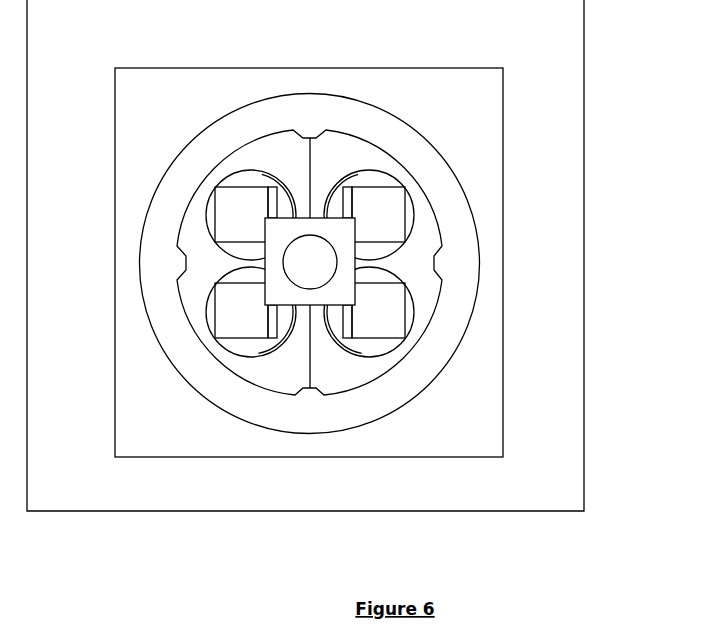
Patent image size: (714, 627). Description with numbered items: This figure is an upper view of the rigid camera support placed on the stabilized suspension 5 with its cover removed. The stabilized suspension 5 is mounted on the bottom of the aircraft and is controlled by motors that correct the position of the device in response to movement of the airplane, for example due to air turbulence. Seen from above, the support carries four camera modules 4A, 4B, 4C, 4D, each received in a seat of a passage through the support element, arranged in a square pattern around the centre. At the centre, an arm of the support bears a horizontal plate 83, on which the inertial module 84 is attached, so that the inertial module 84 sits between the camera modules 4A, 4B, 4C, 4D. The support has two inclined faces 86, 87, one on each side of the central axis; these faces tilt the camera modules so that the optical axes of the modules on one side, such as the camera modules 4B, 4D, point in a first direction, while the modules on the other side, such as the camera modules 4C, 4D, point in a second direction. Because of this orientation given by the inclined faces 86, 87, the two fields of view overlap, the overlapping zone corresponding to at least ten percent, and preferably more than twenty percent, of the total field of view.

The stabilized suspension 5 is at (584, 414).
The camera module 4A is at (251, 312).
The camera module 4B is at (251, 215).
The camera module 4C is at (369, 312).
The camera module 4D is at (369, 215).
The horizontal plate 83 is at (342, 242).
The inertial module 84 is at (322, 261).
The inclined face 86 is at (275, 368).
The inclined face 87 is at (345, 368).